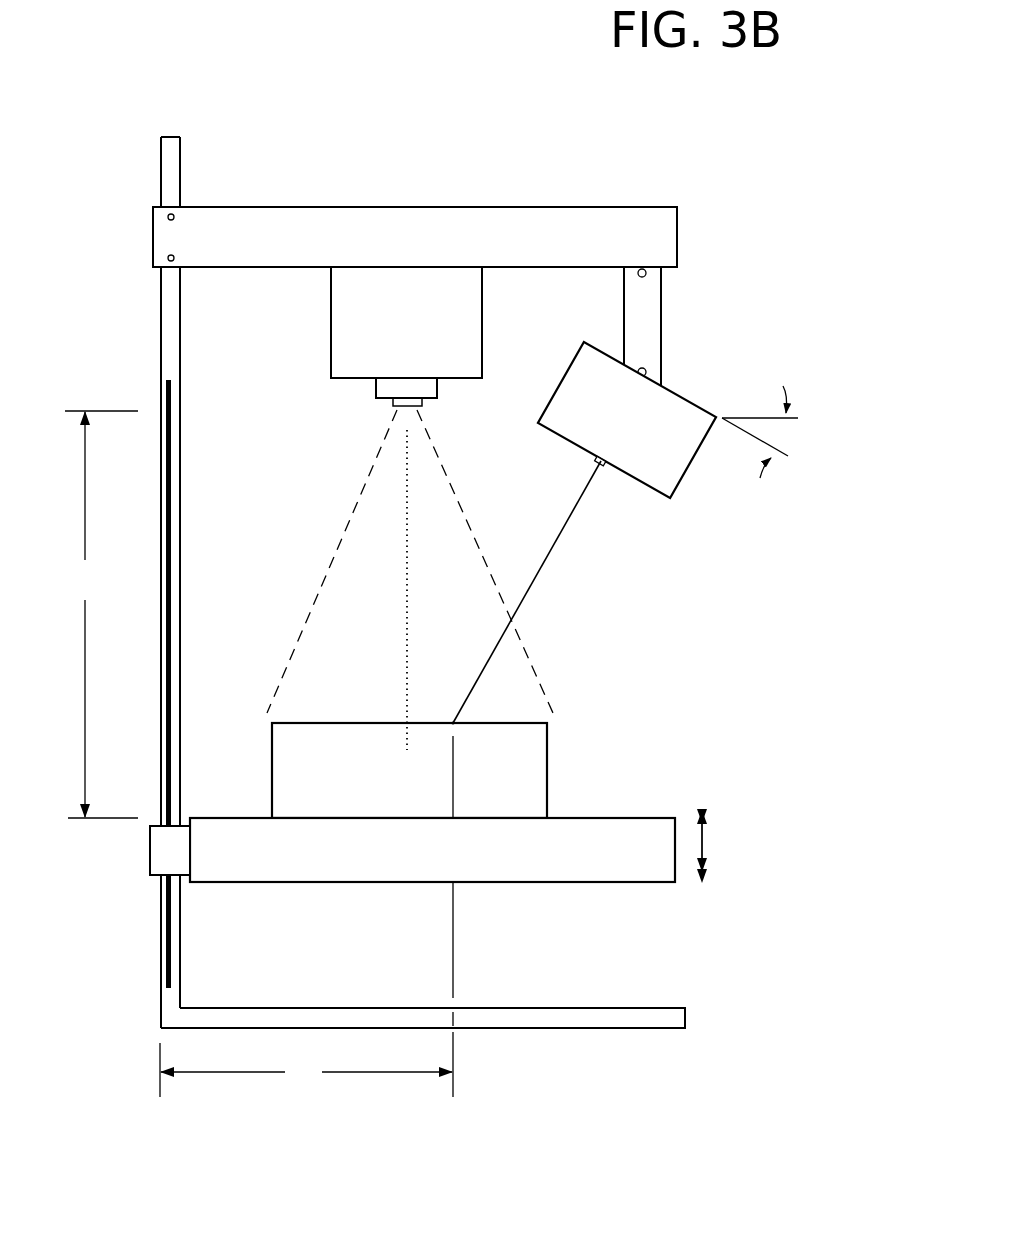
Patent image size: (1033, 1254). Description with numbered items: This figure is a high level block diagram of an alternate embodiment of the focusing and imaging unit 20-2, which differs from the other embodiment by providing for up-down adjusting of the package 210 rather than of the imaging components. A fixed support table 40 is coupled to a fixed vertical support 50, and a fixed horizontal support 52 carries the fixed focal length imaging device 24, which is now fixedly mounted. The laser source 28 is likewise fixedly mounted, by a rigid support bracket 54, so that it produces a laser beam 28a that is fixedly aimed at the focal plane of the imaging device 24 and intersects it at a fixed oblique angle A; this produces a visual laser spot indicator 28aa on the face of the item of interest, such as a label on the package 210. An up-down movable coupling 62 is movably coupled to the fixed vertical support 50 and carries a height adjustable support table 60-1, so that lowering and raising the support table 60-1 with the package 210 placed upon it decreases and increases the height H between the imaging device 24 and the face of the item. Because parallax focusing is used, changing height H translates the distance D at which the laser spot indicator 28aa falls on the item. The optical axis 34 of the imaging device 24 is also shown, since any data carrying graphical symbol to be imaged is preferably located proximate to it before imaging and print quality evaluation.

The focusing and imaging unit 20-2 is at (767, 586).
The imaging device 24 is at (482, 295).
The laser source 28 is at (662, 482).
The laser beam 28a is at (535, 594).
The laser spot indicator 28aa is at (451, 717).
The optical axis 34 is at (407, 545).
The support table 40 is at (612, 1018).
The fixed vertical support 50 is at (177, 427).
The fixed horizontal support 52 is at (412, 207).
The support bracket 54 is at (661, 305).
The height adjustable support table 60-1 is at (513, 883).
The up-down movable coupling 62 is at (160, 848).
The package 210 is at (547, 790).